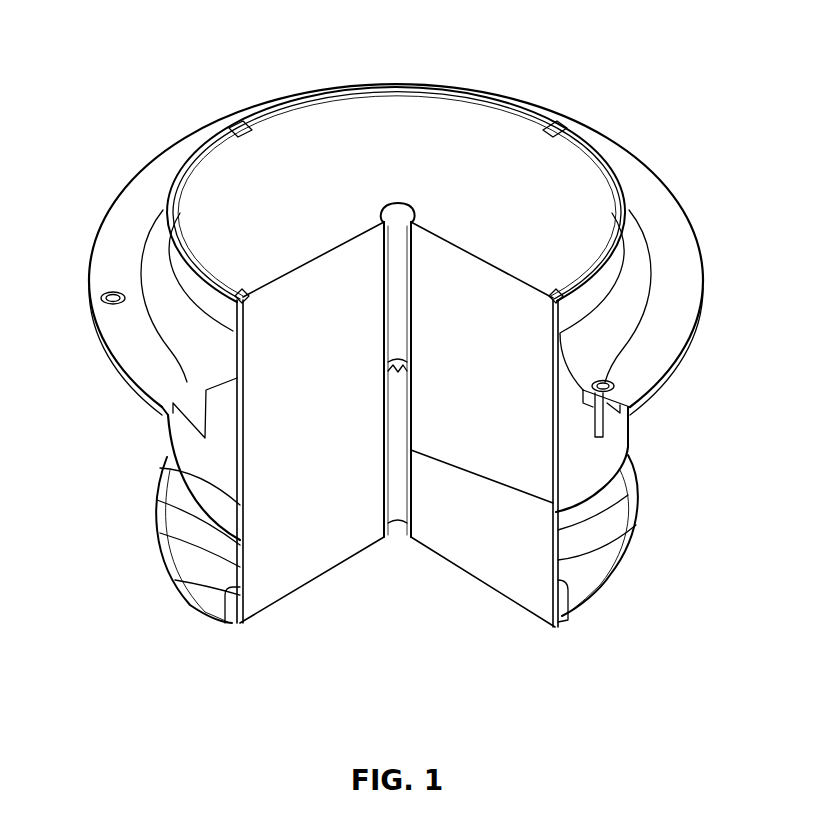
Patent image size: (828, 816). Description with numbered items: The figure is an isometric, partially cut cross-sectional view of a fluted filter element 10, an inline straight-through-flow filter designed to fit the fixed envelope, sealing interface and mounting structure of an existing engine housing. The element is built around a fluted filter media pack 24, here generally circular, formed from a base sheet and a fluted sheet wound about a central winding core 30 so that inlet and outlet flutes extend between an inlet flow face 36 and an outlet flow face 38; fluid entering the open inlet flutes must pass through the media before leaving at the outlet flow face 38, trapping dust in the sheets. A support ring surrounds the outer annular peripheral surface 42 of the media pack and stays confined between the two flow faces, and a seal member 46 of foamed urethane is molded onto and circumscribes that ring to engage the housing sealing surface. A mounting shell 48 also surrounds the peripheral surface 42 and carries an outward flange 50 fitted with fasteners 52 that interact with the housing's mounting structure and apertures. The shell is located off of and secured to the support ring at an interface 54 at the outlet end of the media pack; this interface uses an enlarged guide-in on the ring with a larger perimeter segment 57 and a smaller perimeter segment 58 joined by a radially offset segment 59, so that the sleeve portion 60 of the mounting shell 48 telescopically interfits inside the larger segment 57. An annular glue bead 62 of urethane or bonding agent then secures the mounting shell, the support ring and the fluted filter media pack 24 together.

The fluted filter element 10 is at (684, 45).
The fluted filter media pack 24 is at (333, 553).
The winding core 30 is at (560, 503).
The inlet flow face 36 is at (593, 192).
The outlet flow face 38 is at (428, 553).
The outer annular peripheral surface 42 is at (523, 538).
The seal member 46 is at (547, 593).
The mounting shell 48 is at (207, 450).
The outward flange 50 is at (687, 268).
The fasteners 52 is at (100, 298).
The interface 54 is at (237, 546).
The larger perimeter segment 57 is at (200, 532).
The smaller perimeter segment 58 is at (238, 560).
The radially offset segment 59 is at (233, 588).
The sleeve portion 60 is at (237, 477).
The glue bead 62 is at (600, 540).